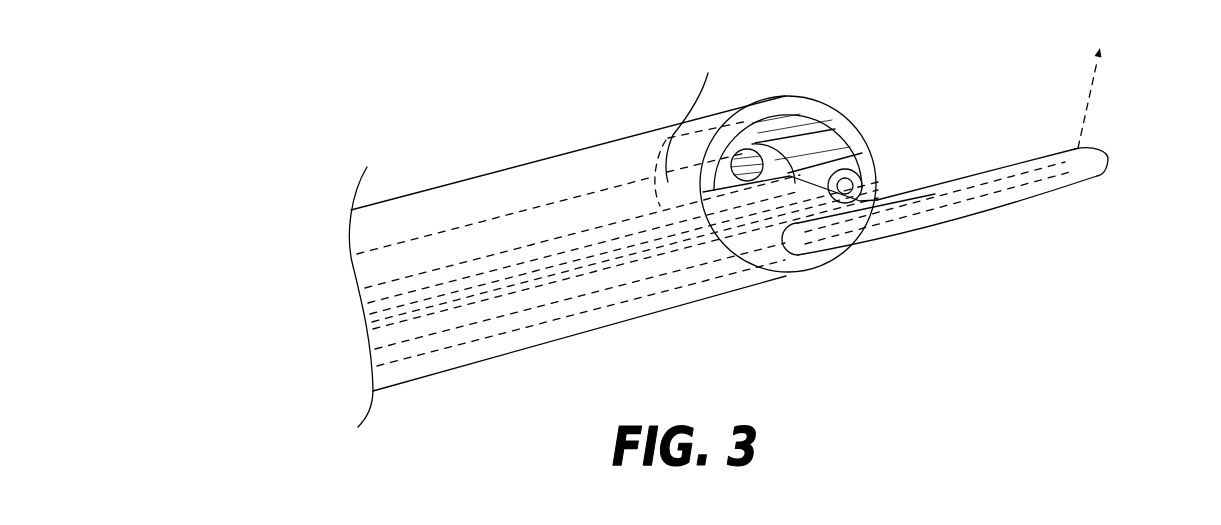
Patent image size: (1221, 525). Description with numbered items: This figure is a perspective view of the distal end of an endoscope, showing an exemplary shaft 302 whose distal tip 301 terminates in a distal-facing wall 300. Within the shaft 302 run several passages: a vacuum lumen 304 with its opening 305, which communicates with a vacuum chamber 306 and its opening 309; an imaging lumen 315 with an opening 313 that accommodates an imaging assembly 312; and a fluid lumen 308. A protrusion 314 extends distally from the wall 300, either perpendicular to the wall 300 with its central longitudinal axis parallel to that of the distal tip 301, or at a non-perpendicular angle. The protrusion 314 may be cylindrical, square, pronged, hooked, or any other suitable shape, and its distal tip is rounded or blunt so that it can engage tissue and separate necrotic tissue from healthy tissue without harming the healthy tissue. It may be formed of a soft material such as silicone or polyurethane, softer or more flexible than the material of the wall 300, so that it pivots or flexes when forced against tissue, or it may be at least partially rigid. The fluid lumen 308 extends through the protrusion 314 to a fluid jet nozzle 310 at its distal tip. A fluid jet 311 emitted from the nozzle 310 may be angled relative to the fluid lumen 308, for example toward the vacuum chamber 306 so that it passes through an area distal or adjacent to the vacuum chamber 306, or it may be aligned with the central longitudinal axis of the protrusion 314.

The distal-facing wall 300 is at (767, 205).
The distal tip 301 is at (583, 107).
The shaft 302 is at (467, 163).
The vacuum lumen 304 is at (701, 126).
The opening 305 is at (750, 148).
The vacuum chamber 306 is at (824, 128).
The fluid lumen 308 is at (1040, 176).
The opening 309 is at (768, 144).
The fluid jet nozzle 310 is at (1095, 151).
The fluid jet 311 is at (1094, 82).
The imaging assembly 312 is at (862, 183).
The opening 313 is at (873, 195).
The protrusion 314 is at (907, 228).
The imaging lumen 315 is at (878, 198).